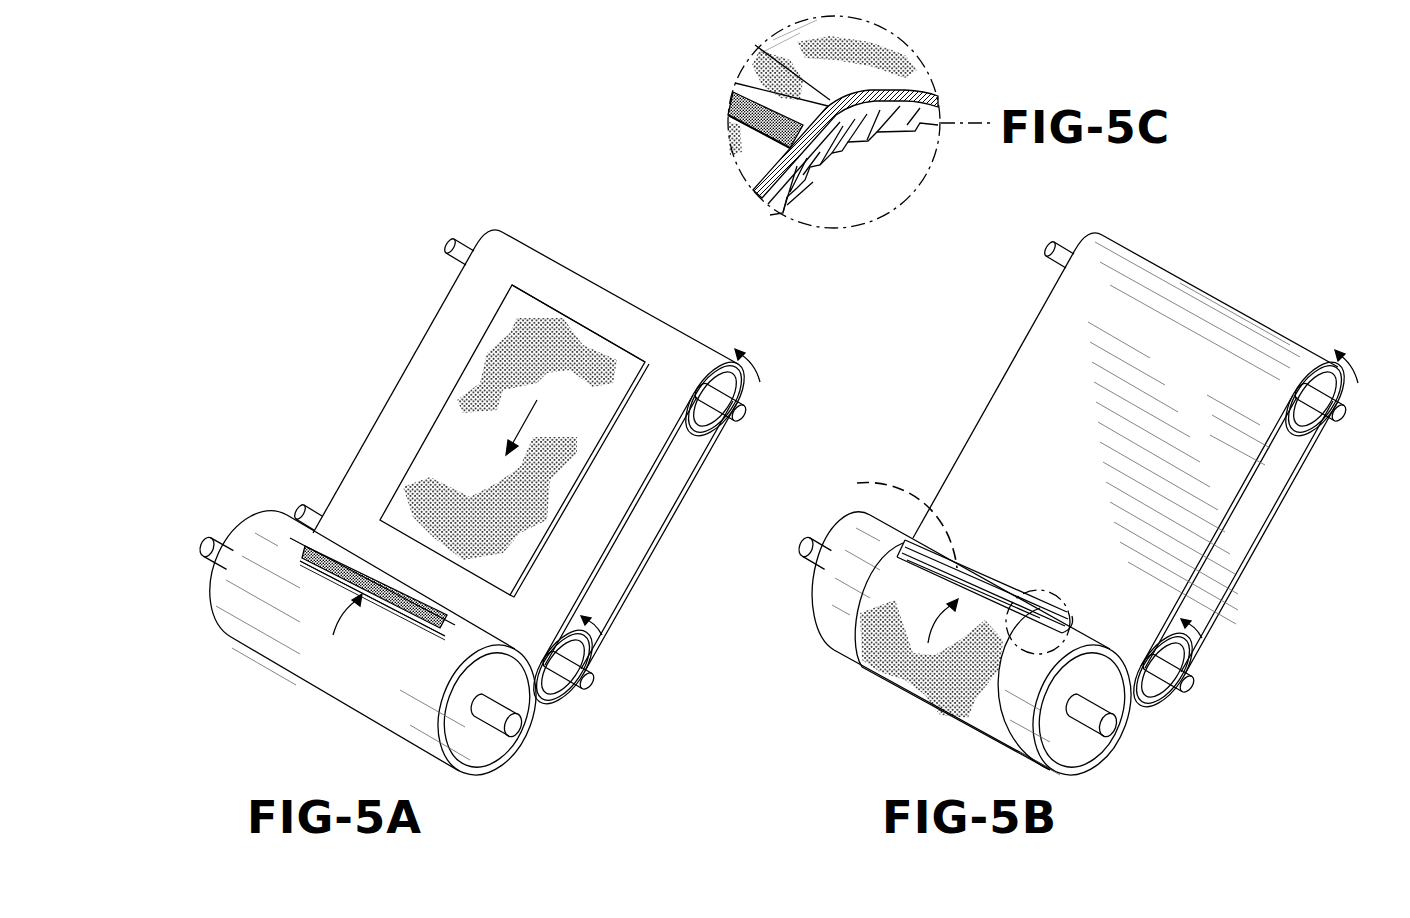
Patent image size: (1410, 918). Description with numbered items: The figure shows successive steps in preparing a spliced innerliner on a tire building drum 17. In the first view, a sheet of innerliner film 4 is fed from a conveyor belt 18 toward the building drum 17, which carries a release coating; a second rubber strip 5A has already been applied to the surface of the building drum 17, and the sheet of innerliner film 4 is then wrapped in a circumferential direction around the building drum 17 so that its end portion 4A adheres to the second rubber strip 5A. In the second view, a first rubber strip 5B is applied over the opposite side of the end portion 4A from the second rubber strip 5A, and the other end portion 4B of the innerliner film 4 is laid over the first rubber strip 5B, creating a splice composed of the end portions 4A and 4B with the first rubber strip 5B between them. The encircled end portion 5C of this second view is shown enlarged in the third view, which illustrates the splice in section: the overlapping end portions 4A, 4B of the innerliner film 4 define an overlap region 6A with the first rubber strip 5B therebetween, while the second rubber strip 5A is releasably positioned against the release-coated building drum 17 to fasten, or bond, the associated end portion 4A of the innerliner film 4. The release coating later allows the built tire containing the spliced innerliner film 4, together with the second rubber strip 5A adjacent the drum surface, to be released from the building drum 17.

In FIG. 5A, the innerliner film 4 is at (450, 393).
In FIG. 5B, the innerliner film 4 is at (937, 710).
In FIG. 5C, the innerliner film 4 is at (910, 85).
In FIG. 5A, the end portion of innerliner film 4A is at (397, 530).
In FIG. 5B, the end portion of innerliner film 4A is at (860, 483).
In FIG. 5C, the end portion of innerliner film 4A is at (843, 112).
In FIG. 5A, the end portion of innerliner film 4B is at (537, 293).
In FIG. 5B, the end portion of innerliner film 4B is at (975, 607).
In FIG. 5C, the end portion of innerliner film 4B is at (732, 104).
In FIG. 5A, the second rubber strip 5A is at (318, 545).
In FIG. 5B, the second rubber strip 5A is at (1048, 632).
In FIG. 5C, the second rubber strip 5A is at (802, 125).
In FIG. 5B, the first rubber strip 5B is at (1020, 615).
In FIG. 5C, the first rubber strip 5B is at (785, 146).
In FIG. 5B, the detail region 5C is at (1048, 590).
In FIG. 5C, the overlap region 6A is at (755, 80).
In FIG. 5A, the tire building drum 17 is at (333, 700).
In FIG. 5B, the tire building drum 17 is at (838, 645).
In FIG. 5C, the tire building drum 17 is at (795, 182).
In FIG. 5A, the conveyor belt 18 is at (612, 294).
In FIG. 5B, the conveyor belt 18 is at (1227, 303).